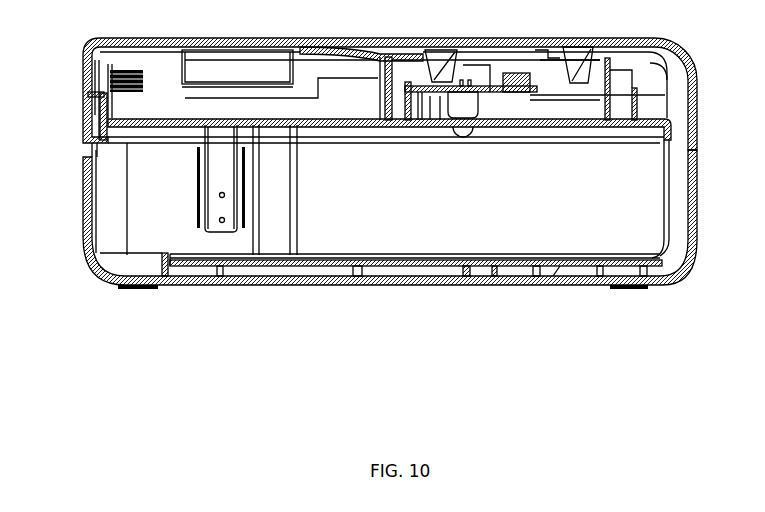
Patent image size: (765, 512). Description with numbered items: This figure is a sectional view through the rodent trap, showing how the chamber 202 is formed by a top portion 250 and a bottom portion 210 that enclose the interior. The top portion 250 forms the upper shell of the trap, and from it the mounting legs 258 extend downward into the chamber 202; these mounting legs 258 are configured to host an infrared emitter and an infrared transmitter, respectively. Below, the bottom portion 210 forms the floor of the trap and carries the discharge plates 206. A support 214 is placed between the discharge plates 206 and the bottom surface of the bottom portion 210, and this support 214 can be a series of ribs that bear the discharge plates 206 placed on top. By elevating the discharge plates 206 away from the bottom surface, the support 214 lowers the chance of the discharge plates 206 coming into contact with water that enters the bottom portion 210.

The top portion 250 is at (97, 51).
The chamber 202 is at (110, 197).
The mounting legs 258 is at (237, 182).
The discharge plates 206 is at (437, 257).
The bottom portion 210 is at (253, 285).
The support 214 is at (460, 285).